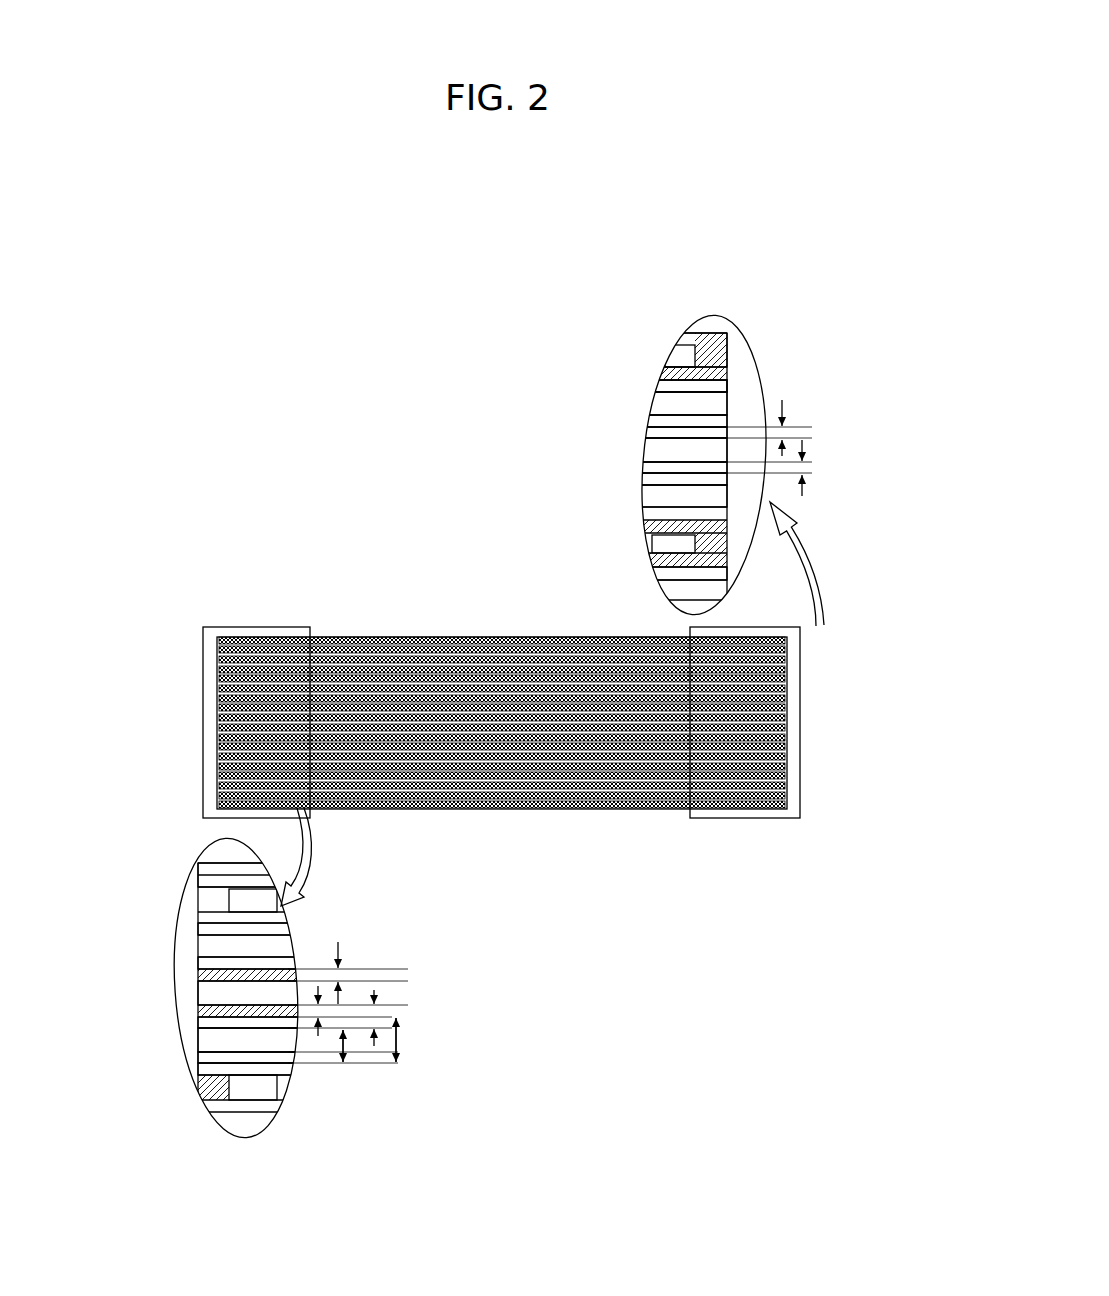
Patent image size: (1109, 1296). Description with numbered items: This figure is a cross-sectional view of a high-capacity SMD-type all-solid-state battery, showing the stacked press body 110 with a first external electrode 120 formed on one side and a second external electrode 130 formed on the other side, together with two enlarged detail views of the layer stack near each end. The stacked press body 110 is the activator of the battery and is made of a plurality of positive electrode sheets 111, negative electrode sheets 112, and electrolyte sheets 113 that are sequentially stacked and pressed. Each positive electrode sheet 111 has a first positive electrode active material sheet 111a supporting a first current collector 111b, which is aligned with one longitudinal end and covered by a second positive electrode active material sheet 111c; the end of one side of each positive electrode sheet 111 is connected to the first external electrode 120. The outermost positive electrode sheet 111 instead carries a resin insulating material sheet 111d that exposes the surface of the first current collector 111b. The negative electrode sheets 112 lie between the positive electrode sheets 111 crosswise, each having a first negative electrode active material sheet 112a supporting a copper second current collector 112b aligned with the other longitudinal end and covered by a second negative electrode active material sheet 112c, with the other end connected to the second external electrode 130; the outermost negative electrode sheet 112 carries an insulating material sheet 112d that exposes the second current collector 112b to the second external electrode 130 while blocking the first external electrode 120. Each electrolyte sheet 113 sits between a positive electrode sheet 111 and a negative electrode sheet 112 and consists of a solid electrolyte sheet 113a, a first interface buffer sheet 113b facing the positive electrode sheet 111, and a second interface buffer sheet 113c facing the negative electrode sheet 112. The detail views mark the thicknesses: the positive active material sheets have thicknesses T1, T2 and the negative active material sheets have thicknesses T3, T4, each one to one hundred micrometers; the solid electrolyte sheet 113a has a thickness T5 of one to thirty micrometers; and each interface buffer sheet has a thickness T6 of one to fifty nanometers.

The stacked press body 110 is at (372, 636).
The first external electrode 120 is at (258, 627).
The second external electrode 130 is at (754, 372).
The positive electrode sheet 111 is at (566, 330).
The first positive electrode active material sheet 111a is at (663, 386).
The first current collector 111b is at (668, 372).
The second positive electrode active material sheet 111c is at (655, 530).
The insulating material sheet 111d is at (672, 340).
The negative electrode sheet 112 is at (478, 454).
The first negative electrode active material sheet 112a is at (645, 476).
The second current collector 112b is at (645, 456).
The second negative electrode active material sheet 112c is at (645, 433).
The insulating material sheet 112d is at (217, 806).
The electrolyte sheet 113 is at (530, 385).
The solid electrolyte sheet 113a is at (655, 405).
The first interface buffer sheet 113b is at (655, 386).
The second interface buffer sheet 113c is at (655, 420).
The thickness T1 is at (342, 972).
The thickness T2 is at (323, 1012).
The thickness T3 is at (805, 458).
The thickness T4 is at (787, 425).
The thickness T5 is at (400, 1045).
The thickness T6 is at (382, 1005).